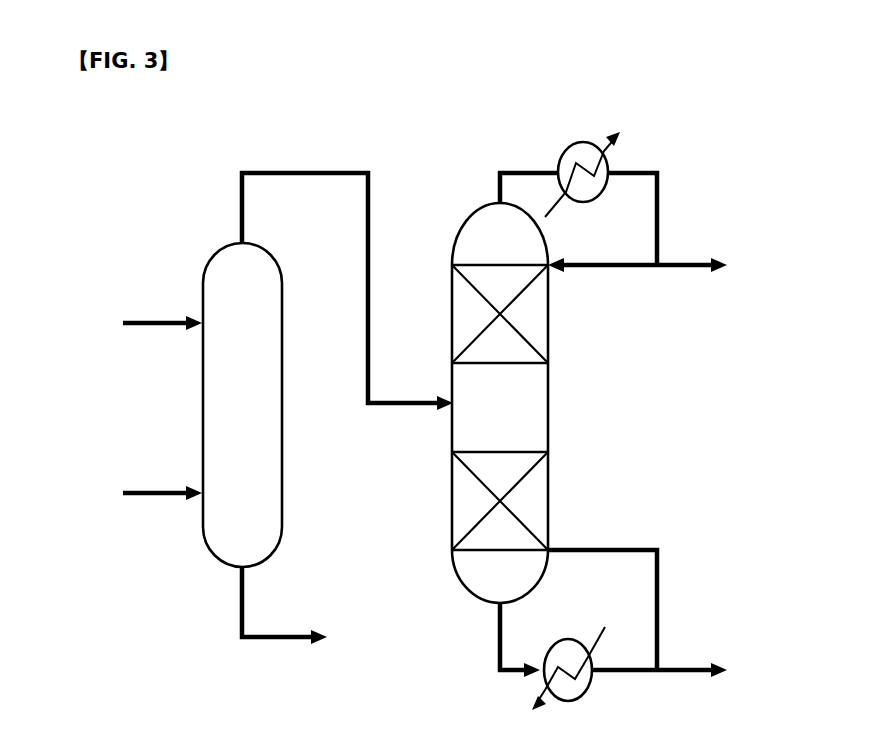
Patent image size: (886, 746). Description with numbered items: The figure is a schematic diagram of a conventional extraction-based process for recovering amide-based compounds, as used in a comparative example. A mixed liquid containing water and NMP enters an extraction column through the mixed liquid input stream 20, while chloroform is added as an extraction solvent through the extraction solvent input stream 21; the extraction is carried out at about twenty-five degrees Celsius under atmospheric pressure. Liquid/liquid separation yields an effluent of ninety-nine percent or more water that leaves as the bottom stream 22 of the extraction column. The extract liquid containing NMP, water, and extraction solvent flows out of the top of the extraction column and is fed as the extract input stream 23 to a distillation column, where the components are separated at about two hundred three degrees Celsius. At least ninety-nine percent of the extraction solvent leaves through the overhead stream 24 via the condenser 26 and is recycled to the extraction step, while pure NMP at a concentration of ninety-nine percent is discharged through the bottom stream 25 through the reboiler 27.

The mixed liquid input stream of extraction column 20 is at (141, 323).
The extraction solvent input stream of extraction column 21 is at (141, 493).
The bottom stream of extraction column 22 is at (301, 607).
The extract input stream of distillation column 23 is at (347, 305).
The overhead stream of distillation column 24 is at (630, 224).
The bottom stream of distillation column 25 is at (630, 615).
The condenser of distillation column 26 is at (599, 170).
The reboiler of distillation column 27 is at (575, 673).